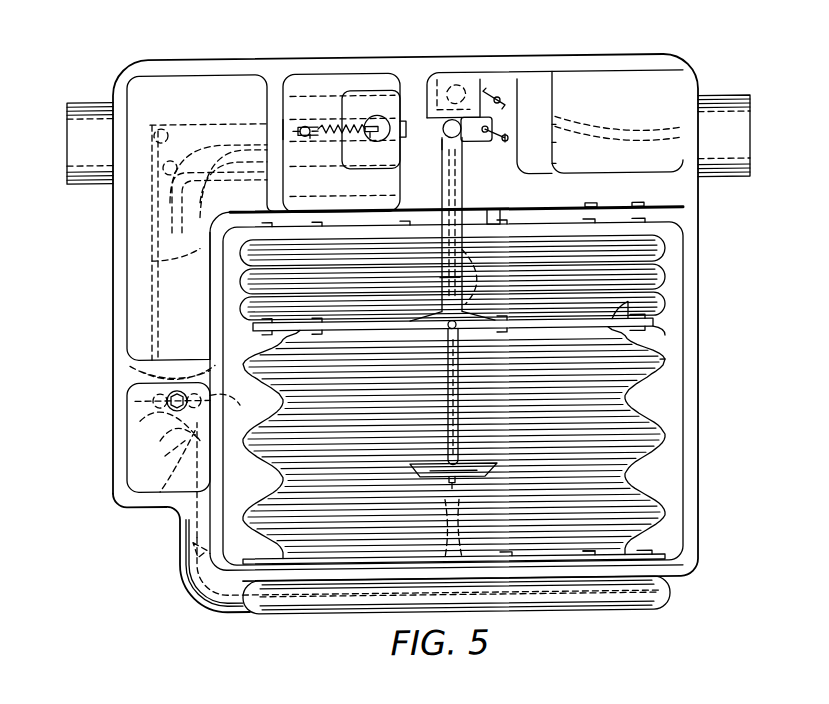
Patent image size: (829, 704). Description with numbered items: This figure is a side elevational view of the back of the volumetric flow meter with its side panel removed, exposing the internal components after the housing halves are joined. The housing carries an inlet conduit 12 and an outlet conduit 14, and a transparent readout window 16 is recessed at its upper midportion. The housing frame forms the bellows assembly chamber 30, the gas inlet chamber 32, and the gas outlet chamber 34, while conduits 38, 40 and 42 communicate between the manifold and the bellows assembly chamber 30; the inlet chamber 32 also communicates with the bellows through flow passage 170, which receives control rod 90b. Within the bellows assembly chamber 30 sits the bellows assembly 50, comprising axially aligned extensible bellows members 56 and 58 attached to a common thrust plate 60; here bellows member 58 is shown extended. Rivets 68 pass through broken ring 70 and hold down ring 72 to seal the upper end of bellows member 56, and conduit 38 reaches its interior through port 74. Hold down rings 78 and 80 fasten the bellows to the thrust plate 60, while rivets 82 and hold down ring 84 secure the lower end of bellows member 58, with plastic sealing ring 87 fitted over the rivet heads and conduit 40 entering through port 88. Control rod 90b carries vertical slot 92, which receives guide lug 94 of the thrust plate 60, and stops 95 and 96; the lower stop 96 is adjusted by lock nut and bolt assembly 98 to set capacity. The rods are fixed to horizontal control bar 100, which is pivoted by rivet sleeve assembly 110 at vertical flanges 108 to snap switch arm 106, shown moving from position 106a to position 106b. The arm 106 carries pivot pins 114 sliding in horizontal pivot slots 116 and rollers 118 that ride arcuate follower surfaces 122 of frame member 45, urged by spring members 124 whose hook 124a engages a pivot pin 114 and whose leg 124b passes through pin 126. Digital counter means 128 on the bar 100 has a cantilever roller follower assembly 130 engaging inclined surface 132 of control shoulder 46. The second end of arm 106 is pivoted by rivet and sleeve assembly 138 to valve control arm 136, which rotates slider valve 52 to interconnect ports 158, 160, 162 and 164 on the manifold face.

The inlet conduit 12 is at (722, 101).
The outlet conduit 14 is at (82, 99).
The transparent readout window 16 is at (446, 120).
The bellows assembly chamber 30 is at (673, 414).
The gas inlet chamber 32 is at (663, 89).
The gas outlet chamber 34 is at (137, 89).
The conduit 38 is at (152, 309).
The conduit 40 is at (183, 553).
The conduit 42 is at (236, 401).
The snap switch frame member 45 is at (309, 111).
The control shoulder 46 is at (514, 105).
The bellows assembly 50 is at (678, 369).
The slider valve 52 is at (160, 417).
The bellows member 56 is at (665, 258).
The bellows member 58 is at (665, 440).
The thrust plate 60 is at (613, 319).
The rivets 68 is at (590, 205).
The broken ring 70 is at (645, 205).
The hold down ring 72 is at (660, 230).
The port 74 is at (440, 246).
The hold down ring 78 is at (655, 321).
The hold down ring 80 is at (665, 336).
The rivets 82 is at (590, 553).
The hold down ring 84 is at (667, 556).
The plastic sealing ring 87 is at (675, 597).
The port 88 is at (445, 555).
The control rod 90b is at (440, 275).
The vertical slot 92 is at (459, 360).
The guide lug 94 is at (449, 329).
The upper stop 95 is at (478, 312).
The lower stop 96 is at (415, 469).
The lock nut and bolt assembly 98 is at (480, 474).
The horizontal control bar 100 is at (475, 112).
The snap switch arm 106 is at (201, 122).
The snap switch arm position 106a is at (552, 126).
The snap switch arm position 106b is at (552, 144).
The vertical flanges 108 is at (467, 128).
The rivet sleeve assembly 110 is at (403, 120).
The pivot pins 114 is at (311, 137).
The horizontal pivot slots 116 is at (283, 124).
The rollers 118 is at (363, 145).
The arcuate follower surface 122 is at (380, 117).
The spring member 124 is at (305, 124).
The hook 124a is at (292, 128).
The leg 124b is at (360, 127).
The pin 126 is at (370, 124).
The digital counter means 128 is at (480, 118).
The cantilever roller follower assembly 130 is at (552, 165).
The inclined surface 132 is at (487, 94).
The valve control arm 136 is at (152, 266).
The rivet and sleeve assembly 138 is at (162, 126).
The port 158 is at (166, 459).
The port 160 is at (140, 368).
The valve port 162 is at (160, 438).
The valve port 164 is at (165, 396).
The flow passage 170 is at (497, 225).